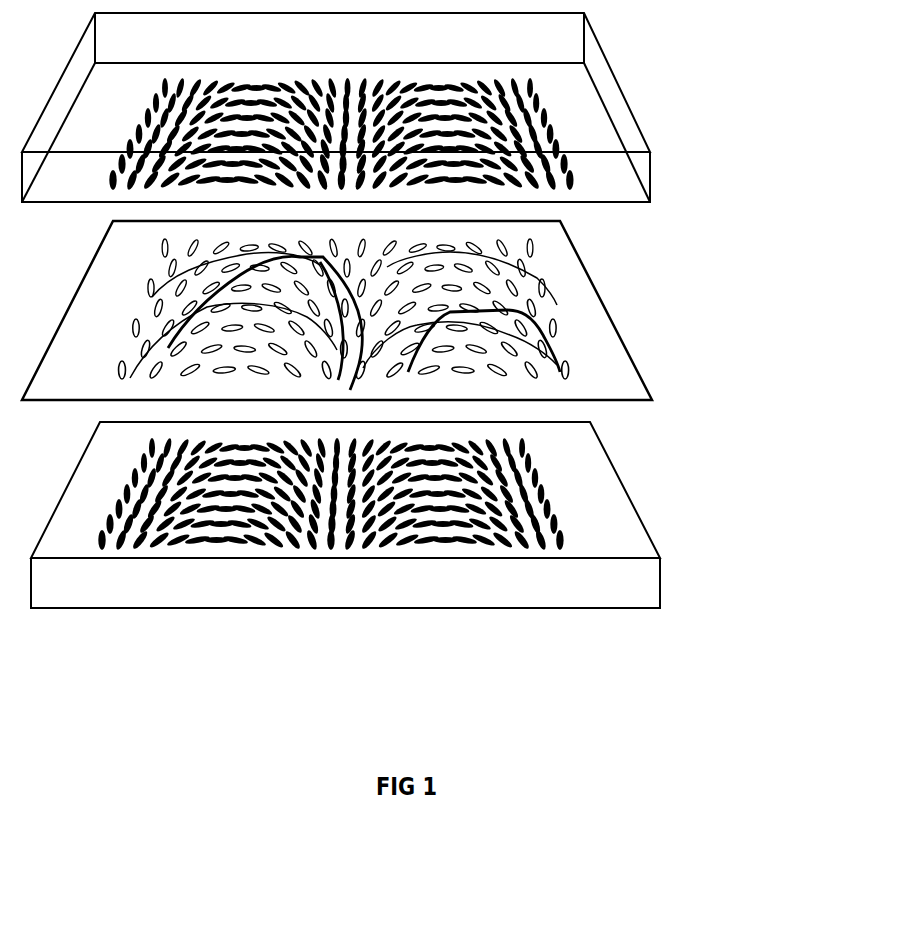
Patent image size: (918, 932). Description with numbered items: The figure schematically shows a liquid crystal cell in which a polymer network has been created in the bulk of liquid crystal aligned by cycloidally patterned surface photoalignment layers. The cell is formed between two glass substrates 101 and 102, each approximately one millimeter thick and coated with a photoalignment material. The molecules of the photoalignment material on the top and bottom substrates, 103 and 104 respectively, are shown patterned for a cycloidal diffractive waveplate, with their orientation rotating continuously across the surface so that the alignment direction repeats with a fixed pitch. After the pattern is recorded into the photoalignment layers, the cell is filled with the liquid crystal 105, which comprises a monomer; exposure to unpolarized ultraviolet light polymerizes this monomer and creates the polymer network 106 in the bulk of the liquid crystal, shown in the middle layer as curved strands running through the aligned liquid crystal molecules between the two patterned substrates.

The glass substrate 101 is at (583, 97).
The glass substrate 102 is at (617, 578).
The photoalignment material molecules on top substrate 103 is at (570, 183).
The photoalignment material molecules on bottom substrate 104 is at (533, 515).
The liquid crystal 105 is at (530, 257).
The polymer network 106 is at (552, 348).